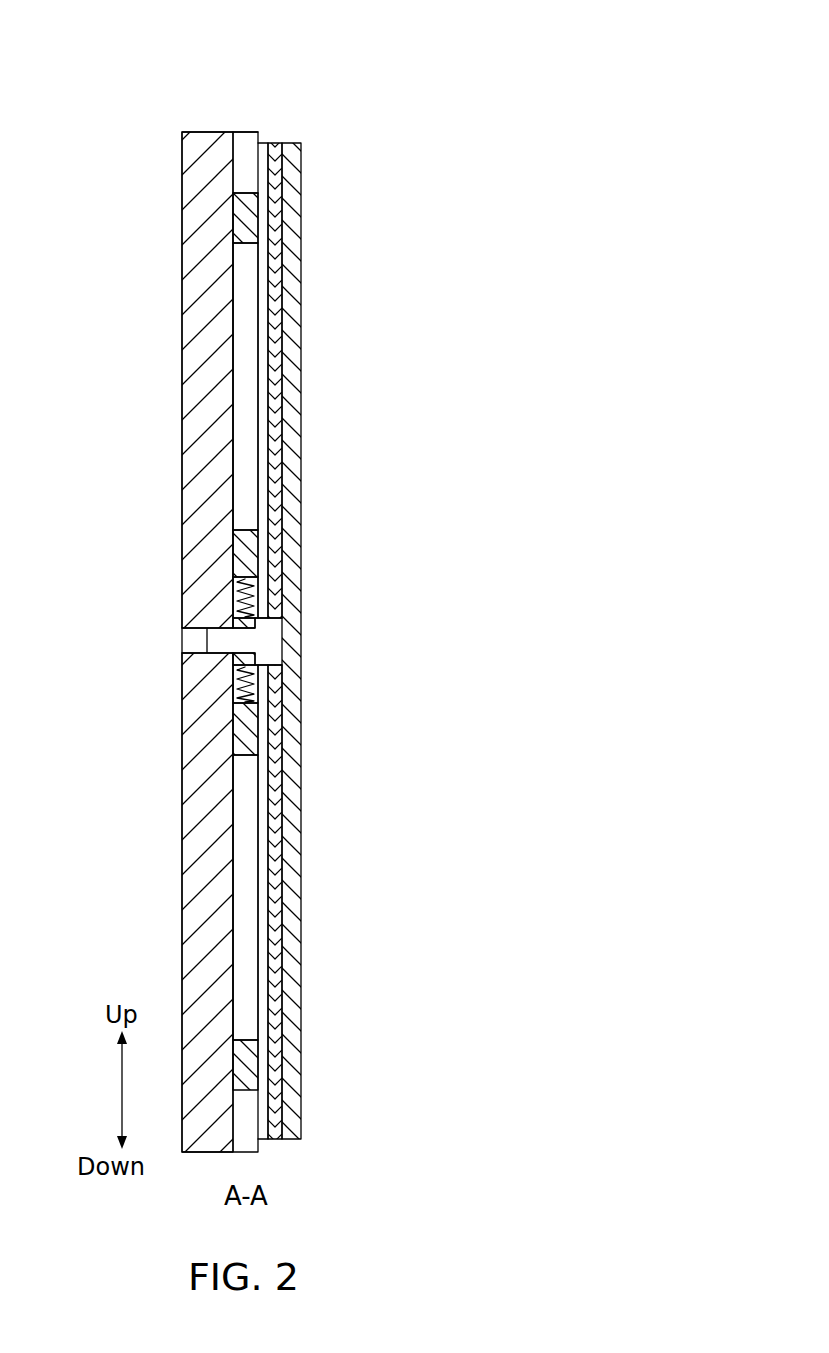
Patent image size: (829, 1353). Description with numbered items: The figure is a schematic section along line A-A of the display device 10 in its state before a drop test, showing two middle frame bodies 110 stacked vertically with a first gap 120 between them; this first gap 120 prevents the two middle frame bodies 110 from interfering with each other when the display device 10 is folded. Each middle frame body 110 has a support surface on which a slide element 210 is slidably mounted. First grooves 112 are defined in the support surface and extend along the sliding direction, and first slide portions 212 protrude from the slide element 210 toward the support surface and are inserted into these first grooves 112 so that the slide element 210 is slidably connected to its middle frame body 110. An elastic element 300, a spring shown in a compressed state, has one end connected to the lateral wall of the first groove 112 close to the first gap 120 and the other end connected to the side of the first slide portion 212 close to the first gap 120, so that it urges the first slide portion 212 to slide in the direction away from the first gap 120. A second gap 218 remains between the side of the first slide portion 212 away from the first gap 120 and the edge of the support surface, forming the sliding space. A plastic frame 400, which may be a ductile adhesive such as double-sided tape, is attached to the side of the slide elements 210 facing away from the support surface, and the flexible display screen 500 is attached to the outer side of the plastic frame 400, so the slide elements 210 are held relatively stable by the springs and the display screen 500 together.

The display device 10 is at (251, 89).
The middle frame body 110 is at (207, 325).
The first groove 112 is at (247, 433).
The first gap 120 is at (244, 643).
The slide element 210 is at (260, 370).
The first slide portion 212 is at (242, 557).
The second gap 218 is at (248, 168).
The elastic element 300 is at (240, 600).
The plastic frame 400 is at (270, 268).
The display screen 500 is at (290, 205).